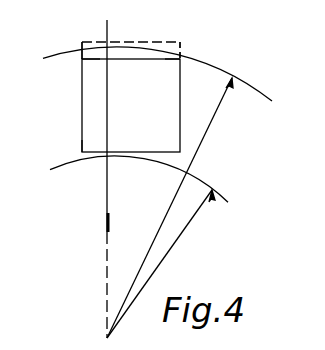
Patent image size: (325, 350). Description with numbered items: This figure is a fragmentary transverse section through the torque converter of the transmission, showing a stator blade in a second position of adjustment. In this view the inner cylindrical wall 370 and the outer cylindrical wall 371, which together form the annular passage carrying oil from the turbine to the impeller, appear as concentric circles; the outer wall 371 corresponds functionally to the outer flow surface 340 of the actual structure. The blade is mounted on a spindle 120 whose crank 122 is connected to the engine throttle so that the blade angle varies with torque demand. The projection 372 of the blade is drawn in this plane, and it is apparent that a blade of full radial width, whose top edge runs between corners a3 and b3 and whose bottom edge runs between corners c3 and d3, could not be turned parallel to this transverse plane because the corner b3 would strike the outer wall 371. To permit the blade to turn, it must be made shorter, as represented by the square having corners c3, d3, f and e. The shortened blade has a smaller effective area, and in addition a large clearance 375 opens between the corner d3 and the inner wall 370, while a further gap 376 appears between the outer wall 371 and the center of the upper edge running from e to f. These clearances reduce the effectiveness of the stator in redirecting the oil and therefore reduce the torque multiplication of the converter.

The spindle 120 is at (107, 28).
The crank 122 is at (107, 224).
The outer flow surface 340 is at (11, 328).
The inner cylindrical wall 370 is at (222, 195).
The outer cylindrical wall 371 is at (240, 82).
The projection of stator blade 372 is at (80, 90).
The clearance 375 is at (172, 164).
The gap 376 is at (124, 56).
The top edge corner a3 is at (80, 43).
The top edge corner b3 is at (182, 42).
The bottom edge corner c3 is at (82, 153).
The bottom edge corner d3 is at (180, 152).
The upper corner of shortened blade e is at (82, 62).
The upper corner of shortened blade f is at (181, 59).